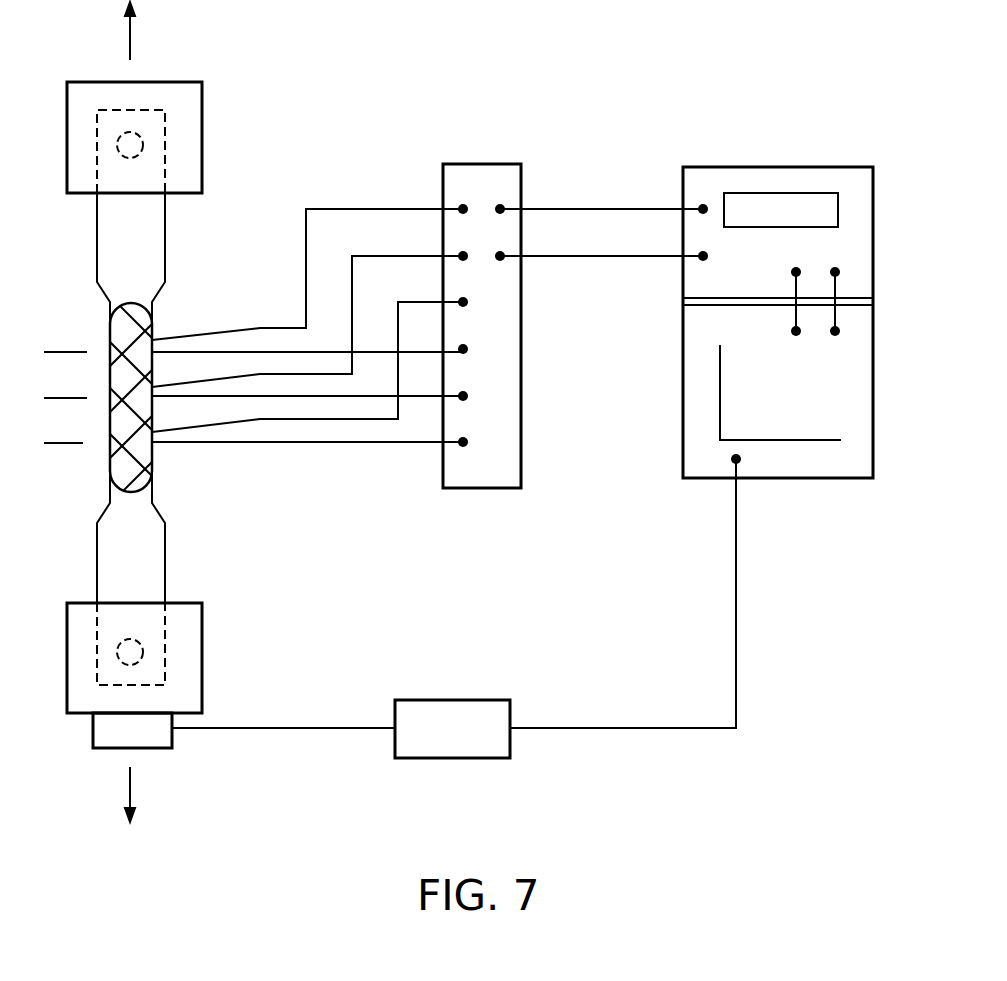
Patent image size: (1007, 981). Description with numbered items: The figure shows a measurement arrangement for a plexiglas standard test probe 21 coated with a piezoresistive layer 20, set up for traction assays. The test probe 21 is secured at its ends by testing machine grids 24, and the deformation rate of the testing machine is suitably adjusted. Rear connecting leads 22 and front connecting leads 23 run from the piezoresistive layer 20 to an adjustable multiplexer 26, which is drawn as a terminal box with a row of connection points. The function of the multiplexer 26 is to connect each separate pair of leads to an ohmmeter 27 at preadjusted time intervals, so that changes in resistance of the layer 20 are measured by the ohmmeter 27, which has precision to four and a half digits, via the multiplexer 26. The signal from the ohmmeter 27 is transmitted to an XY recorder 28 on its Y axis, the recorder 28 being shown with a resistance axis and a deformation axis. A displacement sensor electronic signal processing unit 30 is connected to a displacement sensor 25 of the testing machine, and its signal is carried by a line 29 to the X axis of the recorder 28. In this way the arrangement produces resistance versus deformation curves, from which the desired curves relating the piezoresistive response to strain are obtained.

The piezoresistive layer 20 is at (110, 422).
The standard test probe 21 is at (153, 232).
The rear connecting leads 22 is at (407, 302).
The front connecting leads 23 is at (335, 349).
The testing machine grids 24 is at (192, 95).
The displacement sensor 25 is at (155, 738).
The adjustable multiplexer 26 is at (482, 180).
The ohmmeter 27 is at (762, 183).
The XY recorder 28 is at (858, 355).
The signal line 29 is at (736, 620).
The displacement sensor electronic signal processing unit 30 is at (446, 710).